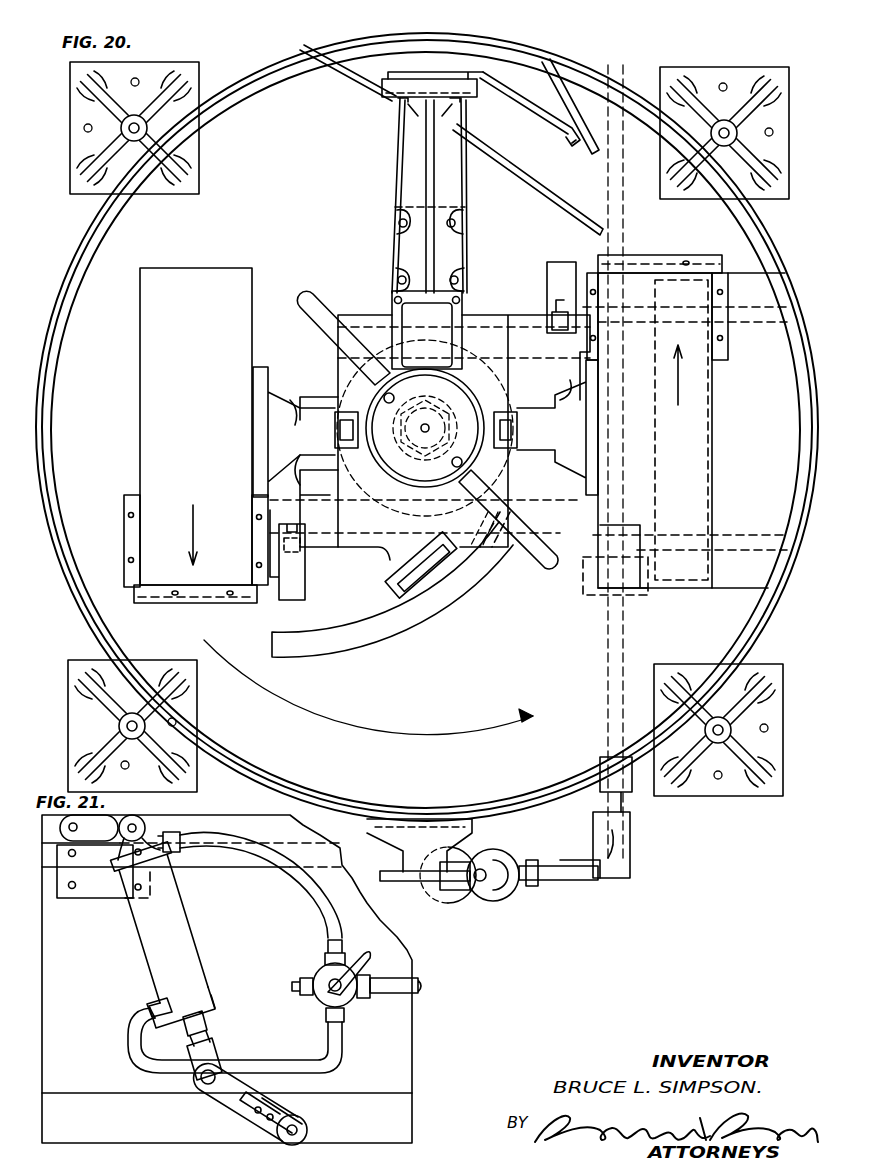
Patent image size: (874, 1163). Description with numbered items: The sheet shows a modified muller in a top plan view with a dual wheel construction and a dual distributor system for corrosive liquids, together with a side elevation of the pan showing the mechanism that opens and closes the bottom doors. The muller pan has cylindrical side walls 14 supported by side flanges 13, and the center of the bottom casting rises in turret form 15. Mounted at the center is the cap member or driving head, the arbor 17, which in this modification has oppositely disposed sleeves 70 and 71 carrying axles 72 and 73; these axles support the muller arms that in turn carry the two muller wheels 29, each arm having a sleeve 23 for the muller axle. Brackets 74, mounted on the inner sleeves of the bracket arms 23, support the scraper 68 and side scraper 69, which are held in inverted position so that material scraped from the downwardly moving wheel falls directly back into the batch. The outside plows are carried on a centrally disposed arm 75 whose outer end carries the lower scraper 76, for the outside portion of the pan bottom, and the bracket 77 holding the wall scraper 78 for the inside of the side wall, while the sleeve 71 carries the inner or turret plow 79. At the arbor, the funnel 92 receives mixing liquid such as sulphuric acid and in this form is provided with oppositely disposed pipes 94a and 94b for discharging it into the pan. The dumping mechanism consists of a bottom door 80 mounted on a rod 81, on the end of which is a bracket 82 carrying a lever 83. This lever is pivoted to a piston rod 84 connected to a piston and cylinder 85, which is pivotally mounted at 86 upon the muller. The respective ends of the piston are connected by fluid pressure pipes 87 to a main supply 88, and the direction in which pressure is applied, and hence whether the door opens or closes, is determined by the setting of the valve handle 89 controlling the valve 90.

In FIG. 21, the side flanges 13 is at (404, 1114).
In FIG. 20, the cylindrical side walls 14 is at (78, 621).
In FIG. 21, the cylindrical side walls 14 is at (410, 1040).
In FIG. 20, the turret 15 is at (390, 513).
In FIG. 20, the cap member 17 is at (512, 462).
In FIG. 20, the sleeve 23 is at (560, 385).
In FIG. 20, the muller wheel 29 is at (140, 380).
In FIG. 20, the scraper 68 is at (174, 605).
In FIG. 20, the side scraper 69 is at (124, 533).
In FIG. 20, the sleeve 70 is at (350, 313).
In FIG. 20, the sleeve 71 is at (506, 543).
In FIG. 20, the axle 72 is at (483, 562).
In FIG. 20, the axle 73 is at (516, 320).
In FIG. 20, the brackets 74 is at (306, 590).
In FIG. 20, the centrally disposed arm 75 is at (459, 191).
In FIG. 20, the lower scraper 76 is at (562, 203).
In FIG. 20, the bracket 77 is at (530, 98).
In FIG. 20, the wall scraper 78 is at (548, 76).
In FIG. 20, the turret plow 79 is at (392, 630).
In FIG. 20, the bottom door 80 is at (740, 588).
In FIG. 20, the rod 81 is at (622, 803).
In FIG. 21, the rod 81 is at (308, 1133).
In FIG. 20, the bracket 82 is at (632, 868).
In FIG. 21, the bracket 82 is at (296, 1110).
In FIG. 20, the lever 83 is at (563, 882).
In FIG. 21, the lever 83 is at (228, 1100).
In FIG. 21, the piston rod 84 is at (213, 1035).
In FIG. 20, the piston and cylinder 85 is at (498, 888).
In FIG. 21, the piston and cylinder 85 is at (195, 955).
In FIG. 20, the pivot 86 is at (446, 892).
In FIG. 21, the pivot 86 is at (137, 825).
In FIG. 21, the fluid pressure pipes 87 is at (308, 888).
In FIG. 21, the main supply 88 is at (420, 992).
In FIG. 21, the valve handle 89 is at (352, 962).
In FIG. 21, the valve 90 is at (320, 975).
In FIG. 20, the funnel 92 is at (406, 473).
In FIG. 20, the pipe 94a is at (547, 568).
In FIG. 20, the pipe 94b is at (310, 318).